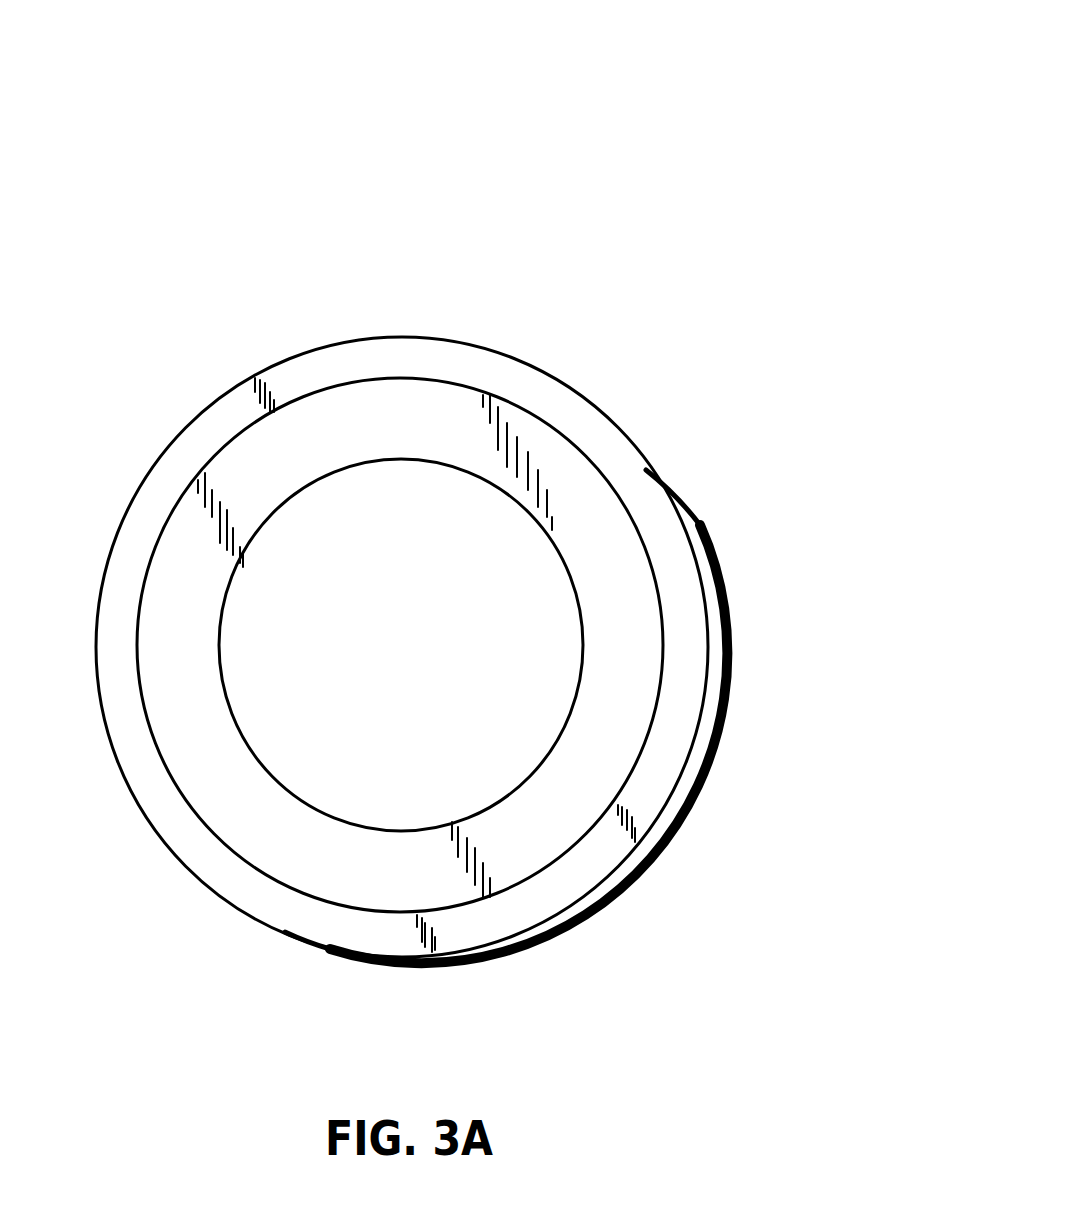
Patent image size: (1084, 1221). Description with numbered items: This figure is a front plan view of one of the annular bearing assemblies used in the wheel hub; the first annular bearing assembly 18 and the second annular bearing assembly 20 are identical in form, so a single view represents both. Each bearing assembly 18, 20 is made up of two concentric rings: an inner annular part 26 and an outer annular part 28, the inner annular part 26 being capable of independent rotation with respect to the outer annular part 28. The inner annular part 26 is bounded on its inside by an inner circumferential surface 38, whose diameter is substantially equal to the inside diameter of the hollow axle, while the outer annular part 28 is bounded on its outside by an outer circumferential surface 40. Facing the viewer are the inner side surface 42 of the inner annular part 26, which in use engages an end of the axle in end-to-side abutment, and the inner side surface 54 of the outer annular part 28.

The first annular bearing assembly 18 is at (454, 554).
The second annular bearing assembly 20 is at (478, 240).
The inner annular part 26 is at (613, 635).
The outer annular part 28 is at (677, 578).
The inner circumferential surface 38 is at (273, 517).
The outer circumferential surface 40 is at (207, 410).
The inner side surface 42 is at (303, 843).
The inner side surface 54 is at (317, 917).